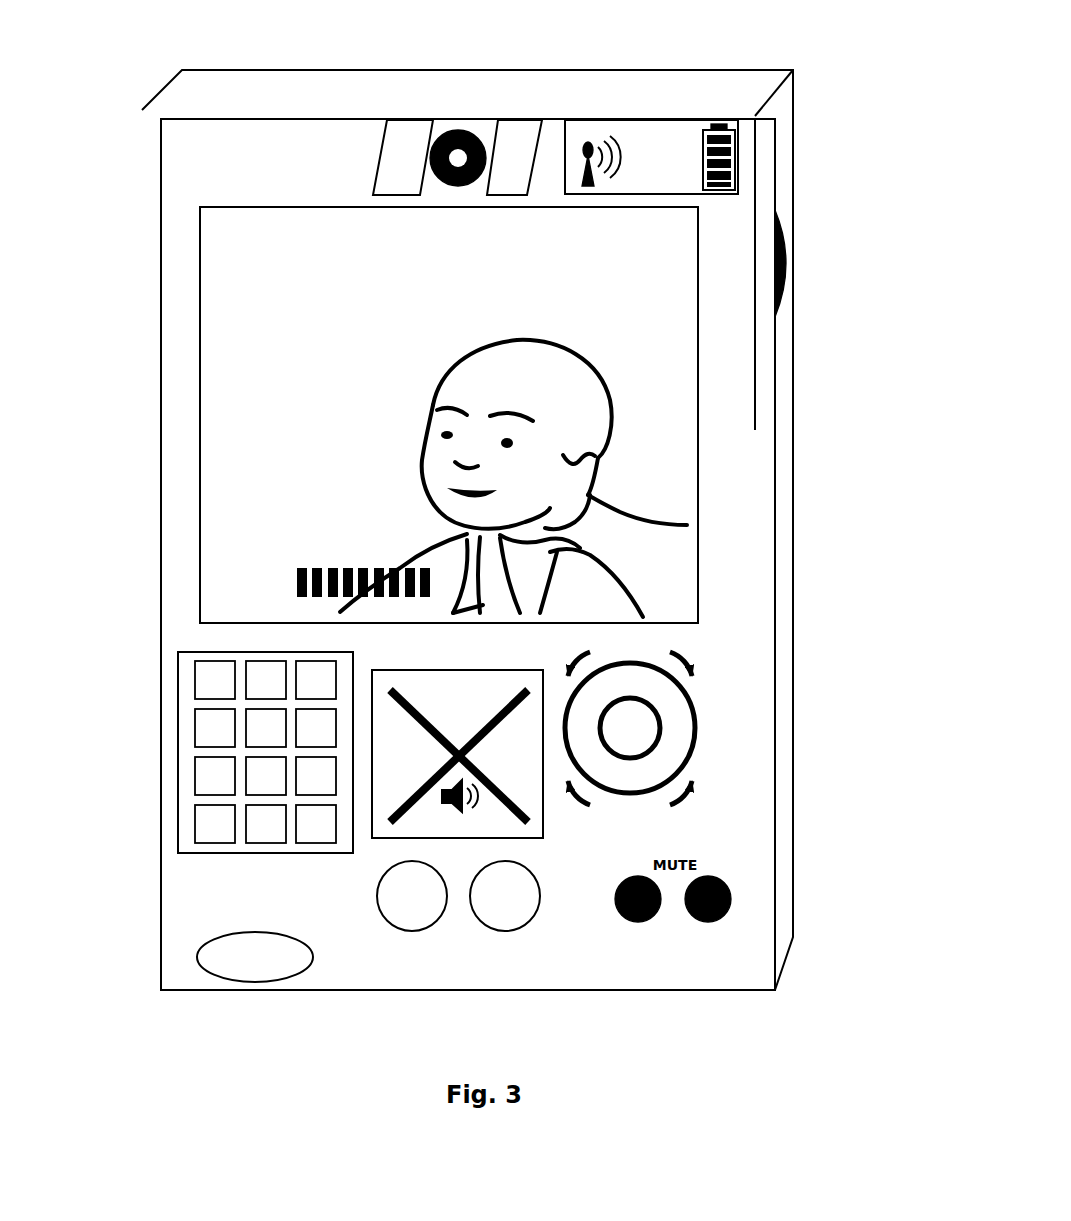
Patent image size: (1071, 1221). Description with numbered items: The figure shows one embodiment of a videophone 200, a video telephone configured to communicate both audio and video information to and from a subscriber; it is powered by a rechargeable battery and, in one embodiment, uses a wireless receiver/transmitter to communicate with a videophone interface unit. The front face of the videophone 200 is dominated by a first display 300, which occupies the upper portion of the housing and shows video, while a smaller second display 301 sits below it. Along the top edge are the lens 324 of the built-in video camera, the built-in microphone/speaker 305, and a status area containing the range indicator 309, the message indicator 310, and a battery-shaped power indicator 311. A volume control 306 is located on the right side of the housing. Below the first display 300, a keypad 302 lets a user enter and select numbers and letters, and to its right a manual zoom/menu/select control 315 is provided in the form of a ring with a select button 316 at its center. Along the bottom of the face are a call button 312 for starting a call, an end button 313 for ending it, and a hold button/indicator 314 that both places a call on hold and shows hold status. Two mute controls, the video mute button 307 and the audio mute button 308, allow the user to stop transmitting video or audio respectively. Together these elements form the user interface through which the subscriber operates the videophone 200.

The videophone 200 is at (420, 530).
The first display 300 is at (295, 213).
The second display 301 is at (528, 823).
The keypad 302 is at (195, 743).
The built-in microphone/speaker 305 is at (523, 135).
The volume control 306 is at (795, 272).
The video mute button 307 is at (640, 922).
The audio mute button 308 is at (733, 893).
The range indicator 309 is at (585, 135).
The message indicator 310 is at (661, 135).
The battery indicator 311 is at (718, 118).
The call button 312 is at (385, 912).
The end button 313 is at (505, 915).
The hold button/indicator 314 is at (235, 932).
The manual zoom/menu/select control 315 is at (702, 705).
The select button 316 is at (662, 728).
The lens 324 is at (463, 133).